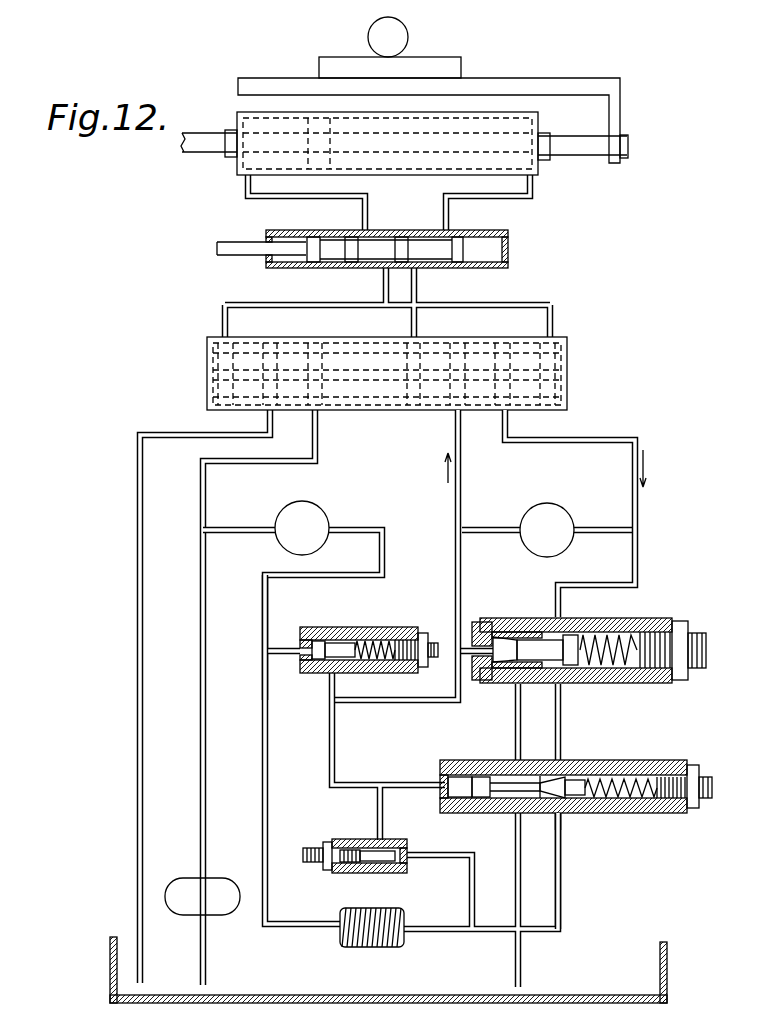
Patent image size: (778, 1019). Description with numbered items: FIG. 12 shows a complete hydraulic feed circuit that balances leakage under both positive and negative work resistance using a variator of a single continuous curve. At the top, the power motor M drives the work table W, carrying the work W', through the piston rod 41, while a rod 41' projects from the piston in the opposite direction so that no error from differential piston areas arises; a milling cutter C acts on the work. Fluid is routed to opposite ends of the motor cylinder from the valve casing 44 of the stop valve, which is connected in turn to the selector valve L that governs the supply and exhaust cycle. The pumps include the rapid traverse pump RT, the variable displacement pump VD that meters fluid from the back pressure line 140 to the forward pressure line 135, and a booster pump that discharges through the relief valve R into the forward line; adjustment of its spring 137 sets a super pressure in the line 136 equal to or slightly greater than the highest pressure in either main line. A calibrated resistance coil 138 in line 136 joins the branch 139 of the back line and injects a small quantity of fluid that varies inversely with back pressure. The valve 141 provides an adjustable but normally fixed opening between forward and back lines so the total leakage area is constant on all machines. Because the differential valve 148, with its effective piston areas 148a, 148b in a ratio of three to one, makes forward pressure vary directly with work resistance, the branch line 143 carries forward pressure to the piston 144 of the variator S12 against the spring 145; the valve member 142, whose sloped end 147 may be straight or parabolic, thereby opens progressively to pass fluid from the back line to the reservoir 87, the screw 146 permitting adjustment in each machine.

The milling cutter C is at (408, 37).
The work W' is at (412, 69).
The work table W is at (429, 111).
The rod 41' is at (209, 135).
The power motor M is at (236, 171).
The piston rod 41 is at (583, 159).
The valve casing 44 is at (510, 250).
The selector valve L is at (568, 380).
The variable displacement pump VD is at (547, 530).
The back pressure line 140 is at (638, 522).
The forward pressure line 135 is at (455, 566).
The super pressure line 136 is at (268, 608).
The relief valve R is at (356, 627).
The spring 137 is at (378, 642).
The effective piston area 148b is at (510, 640).
The effective piston area 148a is at (553, 630).
The differential valve 148 is at (648, 628).
The branch line 143 is at (407, 782).
The piston 144 is at (480, 777).
The variator S12 is at (577, 757).
The valve member 142 is at (570, 782).
The spring 145 is at (652, 779).
The screw 146 is at (708, 777).
The valve portion 147 is at (566, 814).
The valve 141 is at (362, 840).
The branch 139 is at (564, 877).
The calibrated resistance coil 138 is at (384, 950).
The rapid traverse pump RT is at (202, 896).
The reservoir 87 is at (669, 967).